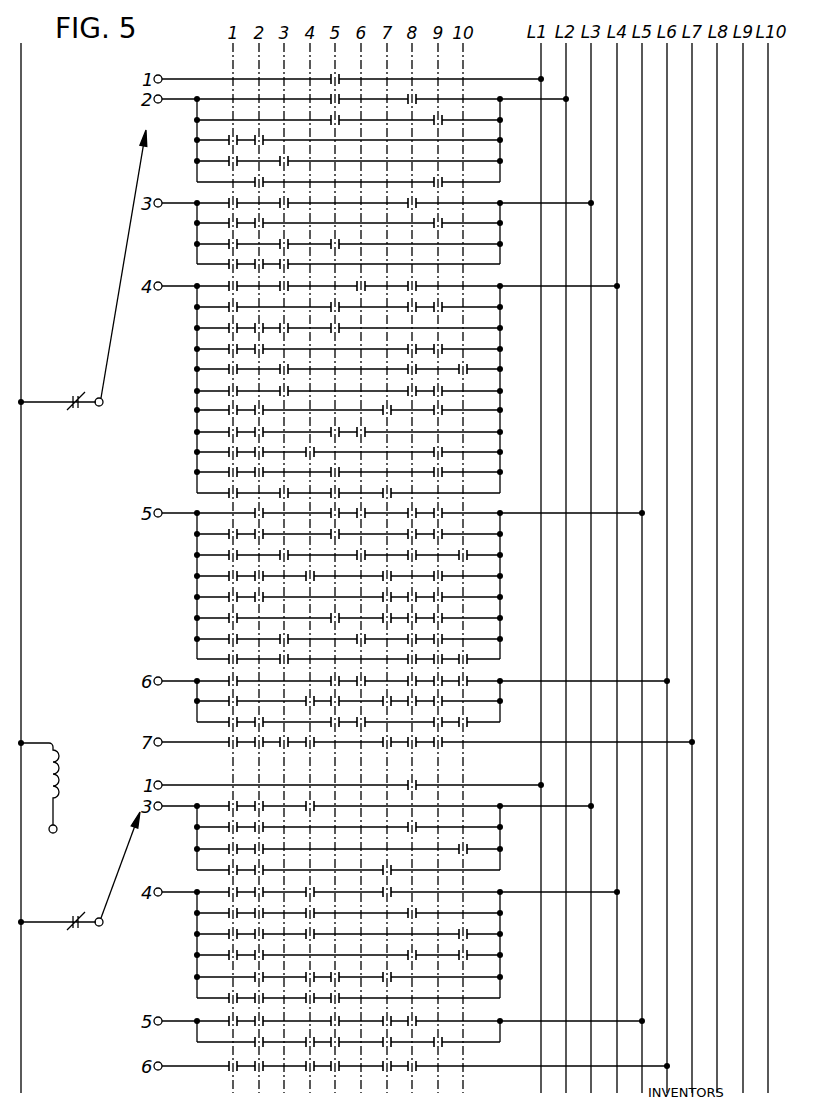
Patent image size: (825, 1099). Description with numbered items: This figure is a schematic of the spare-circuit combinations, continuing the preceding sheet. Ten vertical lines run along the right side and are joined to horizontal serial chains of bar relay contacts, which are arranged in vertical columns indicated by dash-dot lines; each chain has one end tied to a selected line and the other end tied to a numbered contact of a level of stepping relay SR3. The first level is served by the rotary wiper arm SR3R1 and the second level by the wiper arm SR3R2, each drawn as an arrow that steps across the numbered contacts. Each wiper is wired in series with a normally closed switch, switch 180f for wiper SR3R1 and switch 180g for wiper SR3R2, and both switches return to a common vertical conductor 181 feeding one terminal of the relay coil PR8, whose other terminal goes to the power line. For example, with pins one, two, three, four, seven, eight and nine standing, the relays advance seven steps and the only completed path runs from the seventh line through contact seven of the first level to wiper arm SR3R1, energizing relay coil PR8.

The supply bus line 181 is at (22, 535).
The normally closed switch 180f is at (71, 412).
The normally closed switch 180g is at (72, 930).
The relay coil PR8 is at (66, 728).
The wiper arm of stepping relay SR3 level 1 SR3R1 is at (128, 241).
The wiper arm of stepping relay SR3 level 2 SR3R2 is at (124, 866).